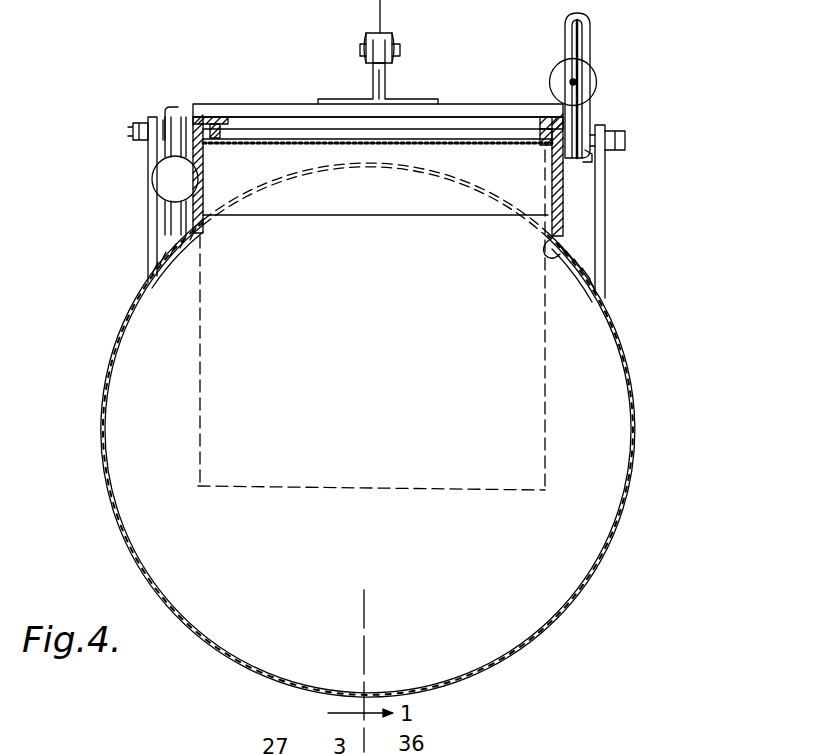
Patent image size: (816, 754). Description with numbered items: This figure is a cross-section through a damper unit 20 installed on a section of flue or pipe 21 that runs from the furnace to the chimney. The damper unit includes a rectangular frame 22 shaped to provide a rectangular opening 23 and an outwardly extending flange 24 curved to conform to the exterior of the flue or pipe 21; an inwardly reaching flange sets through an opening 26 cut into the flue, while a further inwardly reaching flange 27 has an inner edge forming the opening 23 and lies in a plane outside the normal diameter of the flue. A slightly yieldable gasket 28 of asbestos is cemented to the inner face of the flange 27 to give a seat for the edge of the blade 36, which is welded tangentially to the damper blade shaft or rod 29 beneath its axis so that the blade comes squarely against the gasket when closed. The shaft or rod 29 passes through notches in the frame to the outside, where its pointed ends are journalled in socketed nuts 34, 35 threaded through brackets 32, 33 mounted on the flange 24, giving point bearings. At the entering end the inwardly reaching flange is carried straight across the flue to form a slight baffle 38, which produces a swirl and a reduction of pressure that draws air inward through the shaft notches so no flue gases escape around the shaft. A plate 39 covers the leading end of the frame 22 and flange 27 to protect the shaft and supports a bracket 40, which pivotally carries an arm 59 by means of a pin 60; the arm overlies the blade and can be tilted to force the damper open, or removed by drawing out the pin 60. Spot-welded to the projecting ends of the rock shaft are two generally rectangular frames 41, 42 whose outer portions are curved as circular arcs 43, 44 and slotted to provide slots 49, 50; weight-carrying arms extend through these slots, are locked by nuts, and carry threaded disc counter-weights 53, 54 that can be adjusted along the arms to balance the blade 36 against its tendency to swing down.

The damper unit 20 is at (610, 190).
The flue or pipe 21 is at (636, 384).
The frame 22 is at (564, 226).
The rectangular opening 23 is at (238, 124).
The outwardly extending flange 24 is at (558, 182).
The opening cut into the flue 26 is at (562, 256).
The inwardly reaching flange 27 is at (538, 125).
The gasket 28 is at (222, 128).
The damper blade shaft or rod 29 is at (478, 138).
The bracket 32 is at (601, 213).
The bracket 33 is at (152, 238).
The socketed nut 34 is at (626, 141).
The socketed nut 35 is at (133, 131).
The blade 36 is at (283, 141).
The baffle 38 is at (414, 208).
The plate 39 is at (232, 108).
The bracket 40 is at (385, 82).
The frame 41 is at (160, 203).
The frame 42 is at (590, 35).
The curved portion 43 is at (164, 146).
The curved portion 44 is at (592, 60).
The slot 49 is at (176, 217).
The slot 50 is at (584, 47).
The counter-weight 53 is at (168, 178).
The counter-weight 54 is at (586, 85).
The arm 59 is at (392, 36).
The pin 60 is at (400, 51).